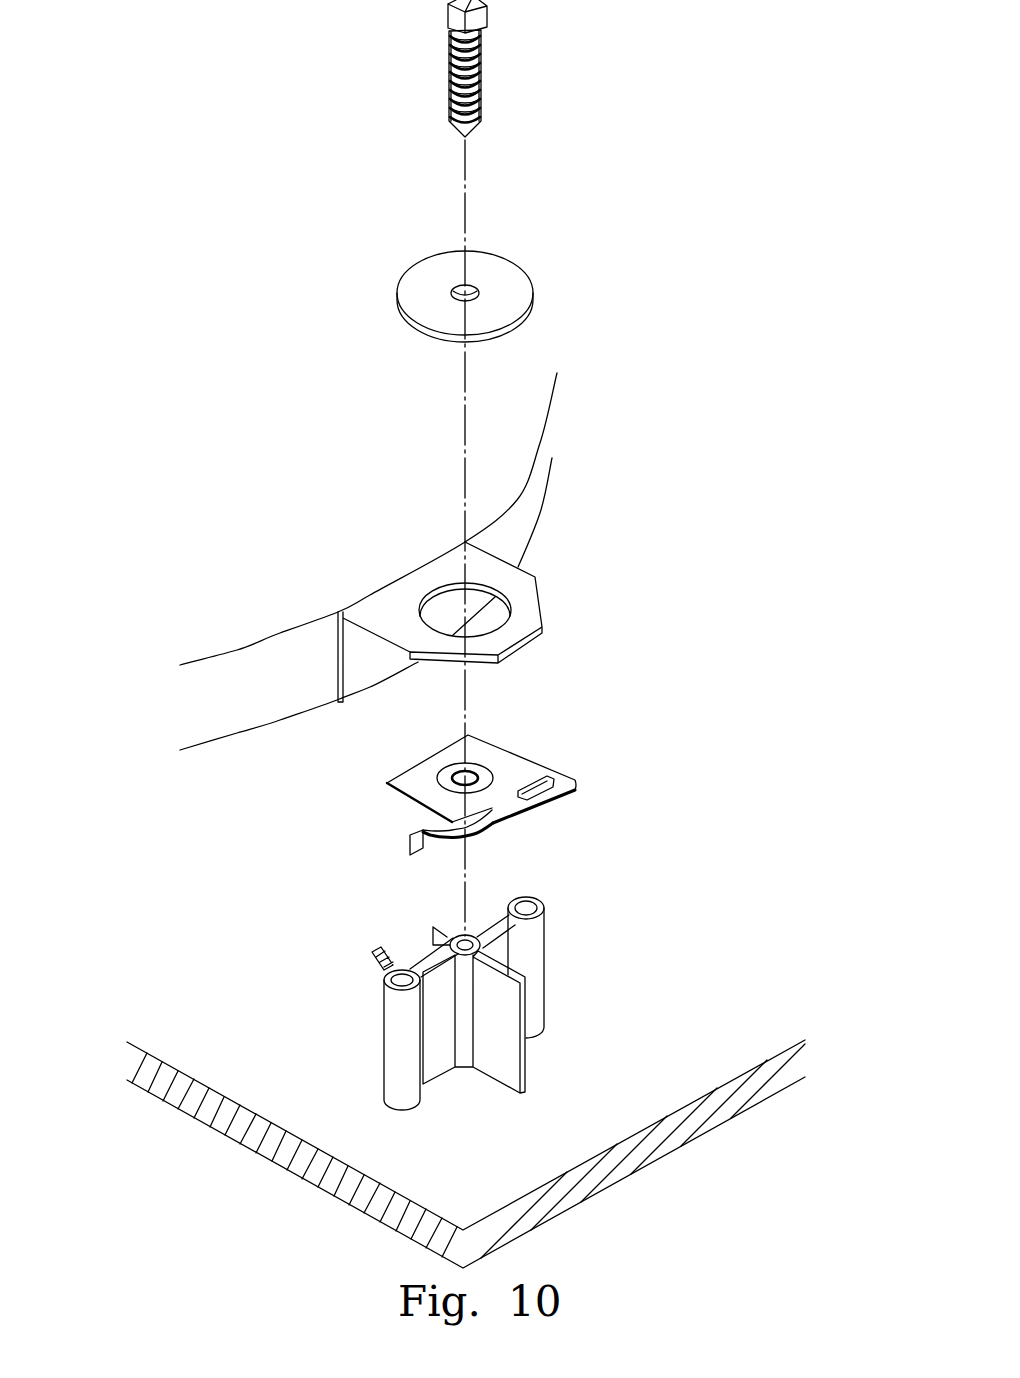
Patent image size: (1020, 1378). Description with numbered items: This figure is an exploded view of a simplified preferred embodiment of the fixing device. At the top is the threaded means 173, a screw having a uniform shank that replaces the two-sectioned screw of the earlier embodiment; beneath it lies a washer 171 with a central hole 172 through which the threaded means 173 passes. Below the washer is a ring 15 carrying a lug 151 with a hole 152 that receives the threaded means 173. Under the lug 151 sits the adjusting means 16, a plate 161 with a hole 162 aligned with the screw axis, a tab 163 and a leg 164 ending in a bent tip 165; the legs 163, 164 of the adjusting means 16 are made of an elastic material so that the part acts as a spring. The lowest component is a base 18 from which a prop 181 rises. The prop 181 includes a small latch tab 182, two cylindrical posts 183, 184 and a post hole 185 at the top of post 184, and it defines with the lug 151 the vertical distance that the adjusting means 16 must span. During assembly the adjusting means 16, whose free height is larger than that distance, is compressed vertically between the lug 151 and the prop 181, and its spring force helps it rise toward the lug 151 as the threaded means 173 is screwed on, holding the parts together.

The shroud ring 15 is at (430, 561).
The lug 151 is at (509, 622).
The mounting hole 152 is at (487, 617).
The adjusting means 16 is at (471, 807).
The clip plate 161 is at (387, 787).
The clip hole 162 is at (482, 786).
The leg 163 is at (552, 770).
The leg 164 is at (440, 837).
The clip leg end 165 is at (410, 850).
The washer 171 is at (479, 277).
The washer hole 172 is at (456, 297).
The threaded means 173 is at (483, 63).
The base plate 18 is at (347, 1152).
The prop 181 is at (452, 988).
The latch tab 182 is at (493, 866).
The post 183 is at (395, 1022).
The post 184 is at (537, 975).
The post hole 185 is at (527, 908).